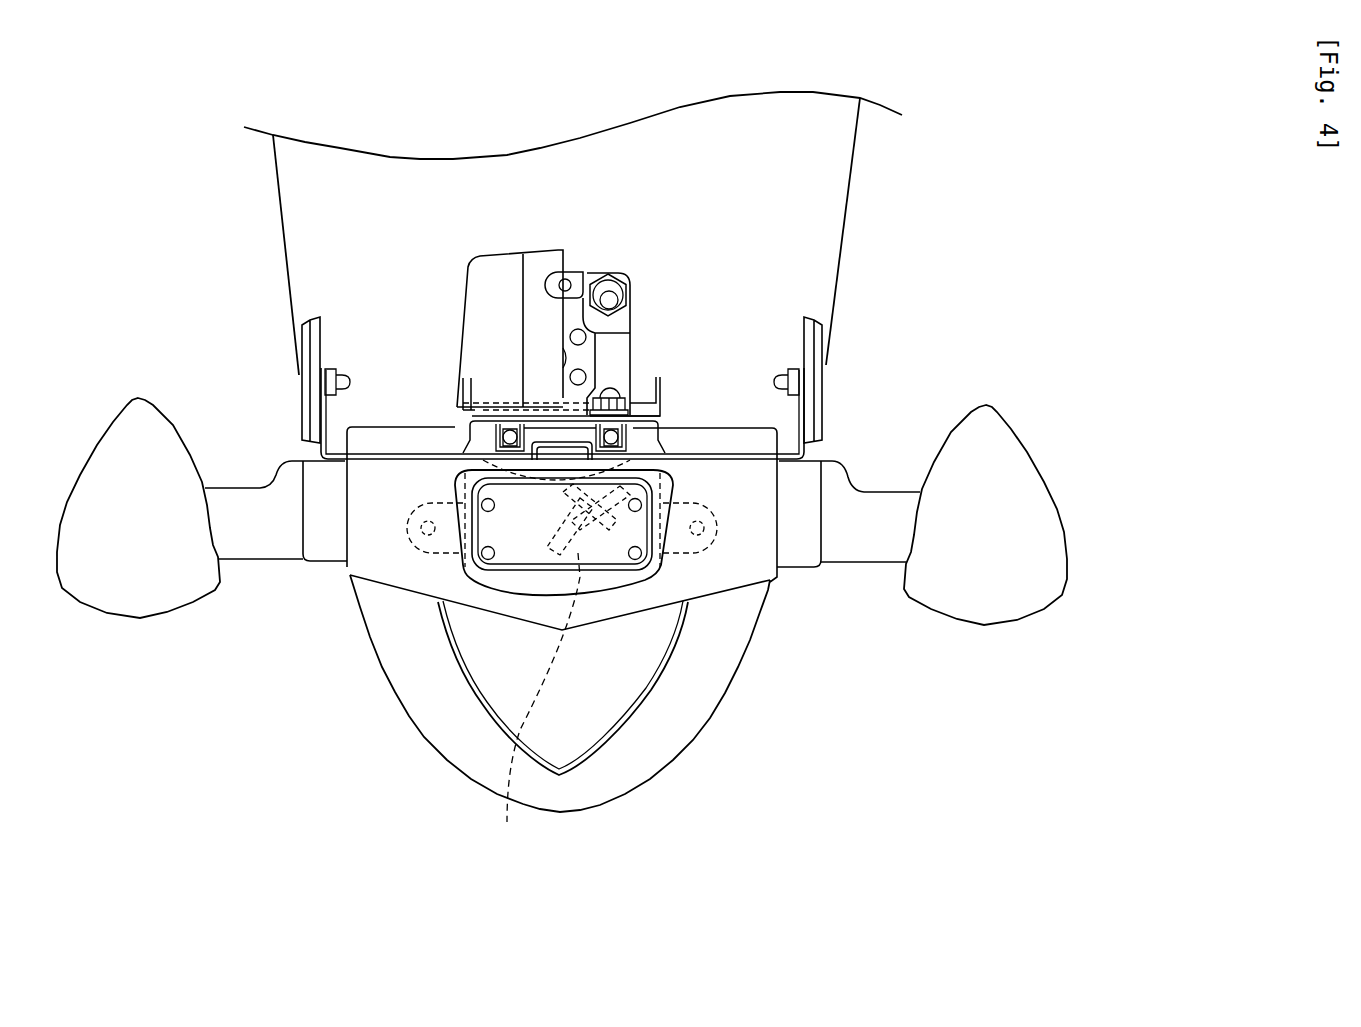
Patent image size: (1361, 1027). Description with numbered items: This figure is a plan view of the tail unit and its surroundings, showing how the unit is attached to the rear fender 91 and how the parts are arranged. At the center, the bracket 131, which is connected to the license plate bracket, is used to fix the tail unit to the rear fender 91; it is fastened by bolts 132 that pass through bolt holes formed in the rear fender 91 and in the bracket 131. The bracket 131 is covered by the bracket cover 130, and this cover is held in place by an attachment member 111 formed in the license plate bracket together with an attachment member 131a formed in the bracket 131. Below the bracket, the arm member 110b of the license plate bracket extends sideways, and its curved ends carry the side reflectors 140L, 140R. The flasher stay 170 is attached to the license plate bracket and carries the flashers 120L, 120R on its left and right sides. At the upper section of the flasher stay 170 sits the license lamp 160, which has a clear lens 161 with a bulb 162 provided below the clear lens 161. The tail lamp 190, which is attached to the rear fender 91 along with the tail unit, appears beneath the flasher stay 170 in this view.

The rear fender 91 is at (810, 250).
The arm member 110b is at (820, 458).
The attachment member 111 is at (464, 390).
The flasher 120L is at (173, 417).
The flasher 120R is at (1040, 457).
The bracket cover 130 is at (511, 268).
The bracket 131 is at (622, 338).
The attachment member 131a is at (563, 281).
The bolt 132 is at (612, 298).
The side reflector 140L is at (302, 338).
The side reflector 140R is at (824, 345).
The license lamp 160 is at (461, 570).
The clear lens 161 is at (512, 578).
The bulb 162 is at (538, 700).
The flasher stay 170 is at (730, 582).
The tail lamp 190 is at (613, 712).